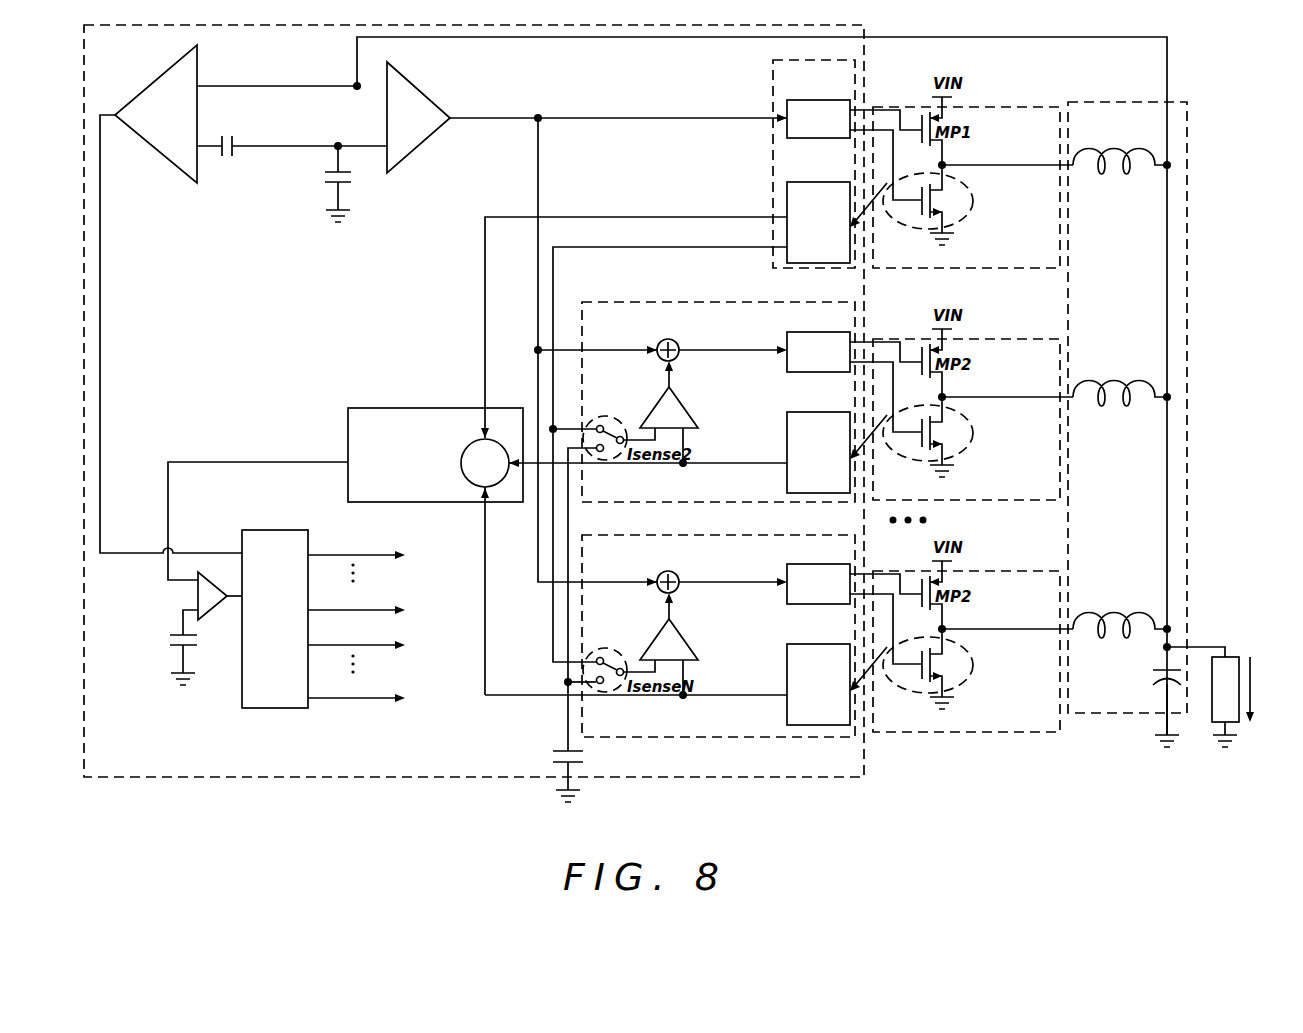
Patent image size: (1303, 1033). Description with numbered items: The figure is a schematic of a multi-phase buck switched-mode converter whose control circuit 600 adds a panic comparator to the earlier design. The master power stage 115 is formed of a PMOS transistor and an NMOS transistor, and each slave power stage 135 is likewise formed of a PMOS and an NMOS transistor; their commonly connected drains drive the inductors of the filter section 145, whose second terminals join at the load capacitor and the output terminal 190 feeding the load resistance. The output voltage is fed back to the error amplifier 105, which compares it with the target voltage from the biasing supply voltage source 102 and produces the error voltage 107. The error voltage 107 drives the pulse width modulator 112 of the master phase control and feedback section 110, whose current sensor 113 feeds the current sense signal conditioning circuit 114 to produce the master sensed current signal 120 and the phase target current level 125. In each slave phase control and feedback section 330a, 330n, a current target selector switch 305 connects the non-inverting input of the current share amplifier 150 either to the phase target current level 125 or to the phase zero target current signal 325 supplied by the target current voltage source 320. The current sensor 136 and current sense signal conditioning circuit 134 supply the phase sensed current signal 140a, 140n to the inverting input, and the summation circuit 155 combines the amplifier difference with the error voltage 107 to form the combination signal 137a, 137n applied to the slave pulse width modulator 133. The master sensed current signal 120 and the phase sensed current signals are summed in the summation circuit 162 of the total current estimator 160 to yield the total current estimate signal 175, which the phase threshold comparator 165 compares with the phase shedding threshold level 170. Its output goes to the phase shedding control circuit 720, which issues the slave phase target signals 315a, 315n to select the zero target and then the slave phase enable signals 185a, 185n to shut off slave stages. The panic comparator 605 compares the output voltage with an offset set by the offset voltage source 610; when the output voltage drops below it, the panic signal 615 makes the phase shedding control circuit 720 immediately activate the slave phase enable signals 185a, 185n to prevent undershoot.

The control circuit 600 is at (150, 779).
The panic comparator 605 is at (178, 64).
The offset voltage source 610 is at (236, 153).
The panic signal 615 is at (100, 248).
The error amplifier 105 is at (385, 104).
The biasing supply voltage source 102 is at (352, 180).
The error voltage 107 is at (580, 117).
The master sensed current signal 120 is at (527, 216).
The phase target current level 125 is at (618, 250).
The phase control and feedback section 110 is at (802, 174).
The pulse width modulator 112 is at (801, 140).
The current sense signal conditioning circuit 114 is at (787, 186).
The current sensor 113 is at (960, 225).
The filter section 145 is at (1187, 147).
The master power stage 115 is at (1060, 228).
The slave power stage 135 is at (1060, 480).
The output terminal 190 is at (1226, 650).
The total current estimator 160 is at (348, 426).
The summation circuit 162 is at (501, 488).
The total current estimate signal 175 is at (213, 461).
The phase threshold comparator 165 is at (212, 592).
The Ips_th threshold source 170 is at (176, 653).
The phase shedding control circuit 720 is at (265, 708).
The slave phase enable signal 185a is at (399, 541).
The slave phase enable signal 185n is at (397, 617).
The slave phase target signal 315a is at (397, 653).
The slave phase target signal 315n is at (397, 709).
The phase zero target current signal 325 is at (568, 712).
The target current voltage source 320 is at (583, 757).
The phase control and feedback section 330a is at (722, 303).
The phase control and feedback section 330n is at (722, 535).
The summation circuit 155 is at (659, 346).
The combination signal 137a is at (762, 349).
The combination signal 137n is at (762, 581).
The pulse width modulator 133 is at (801, 374).
The current sense signal conditioning circuit 134 is at (787, 483).
The current sensor 136 is at (938, 561).
The current share amplifier 150 is at (690, 430).
The current target selector switch 305 is at (592, 418).
The phase sensed current signal 140a is at (596, 461).
The phase sensed current signal 140n is at (596, 693).